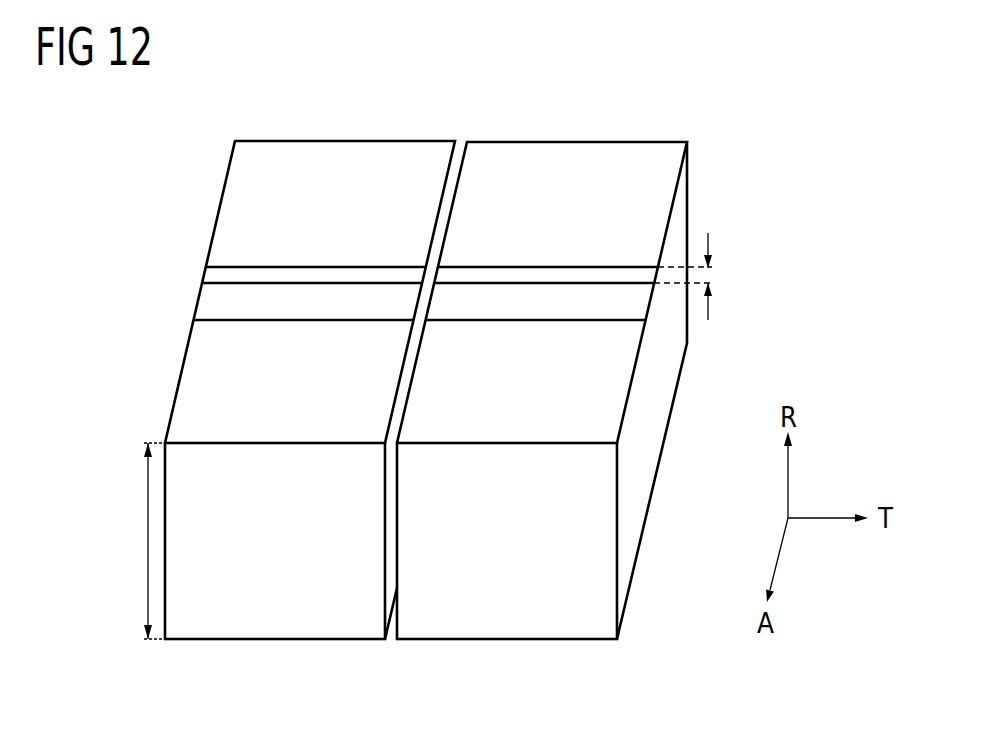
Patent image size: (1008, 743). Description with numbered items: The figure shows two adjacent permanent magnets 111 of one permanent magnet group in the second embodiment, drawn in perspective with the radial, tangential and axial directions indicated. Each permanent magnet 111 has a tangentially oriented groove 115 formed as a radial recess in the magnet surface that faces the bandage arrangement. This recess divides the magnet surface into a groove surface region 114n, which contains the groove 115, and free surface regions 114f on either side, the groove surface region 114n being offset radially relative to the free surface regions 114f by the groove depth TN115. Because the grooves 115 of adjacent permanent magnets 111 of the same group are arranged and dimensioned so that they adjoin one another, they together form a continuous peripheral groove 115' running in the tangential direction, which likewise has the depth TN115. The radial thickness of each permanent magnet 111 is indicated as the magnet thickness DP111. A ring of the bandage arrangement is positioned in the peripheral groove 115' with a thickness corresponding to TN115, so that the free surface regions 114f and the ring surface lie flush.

The permanent magnet 111 is at (494, 117).
The free surface region 114f is at (313, 145).
The groove surface region 114n is at (347, 295).
The groove 115 is at (450, 304).
The peripheral groove 115' is at (312, 254).
The groove depth TN115 is at (712, 277).
The magnet thickness DP111 is at (147, 542).